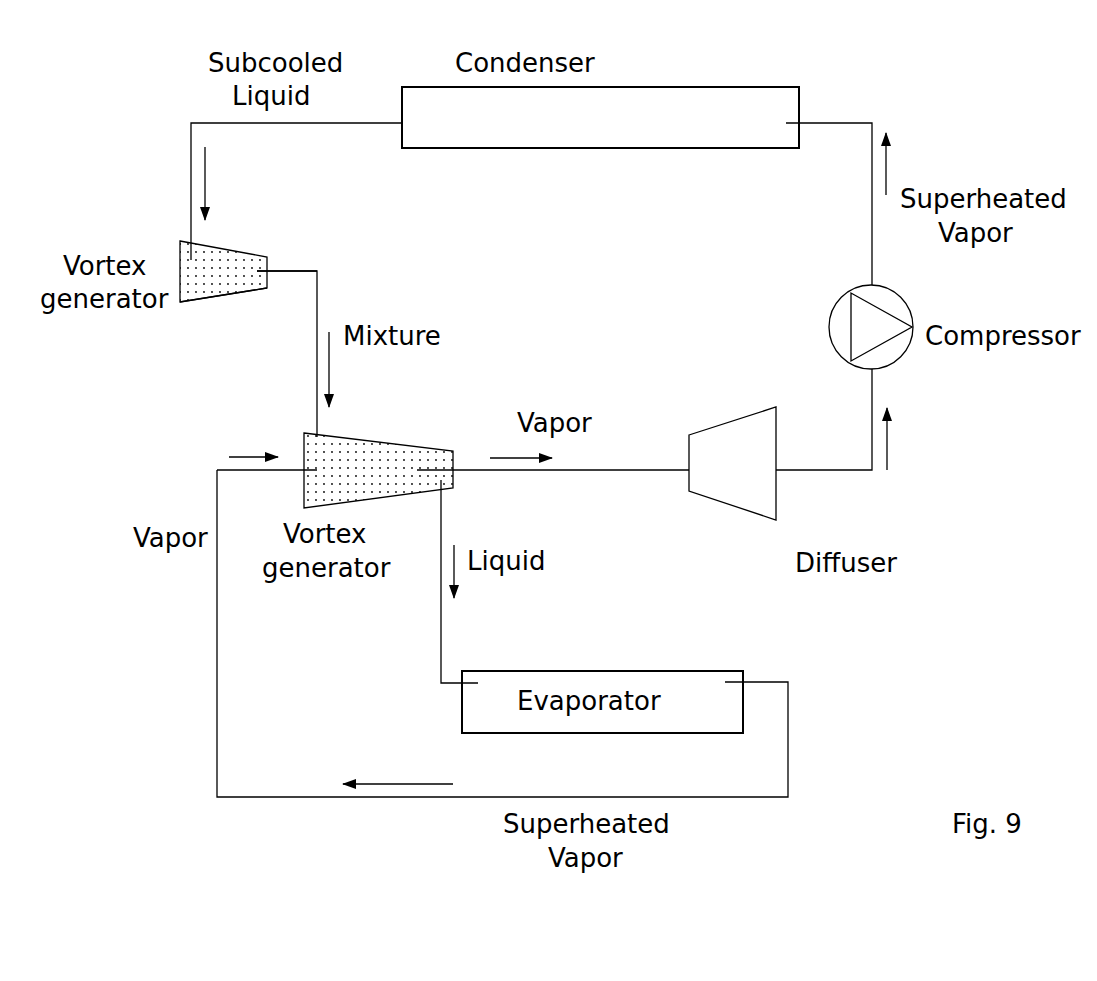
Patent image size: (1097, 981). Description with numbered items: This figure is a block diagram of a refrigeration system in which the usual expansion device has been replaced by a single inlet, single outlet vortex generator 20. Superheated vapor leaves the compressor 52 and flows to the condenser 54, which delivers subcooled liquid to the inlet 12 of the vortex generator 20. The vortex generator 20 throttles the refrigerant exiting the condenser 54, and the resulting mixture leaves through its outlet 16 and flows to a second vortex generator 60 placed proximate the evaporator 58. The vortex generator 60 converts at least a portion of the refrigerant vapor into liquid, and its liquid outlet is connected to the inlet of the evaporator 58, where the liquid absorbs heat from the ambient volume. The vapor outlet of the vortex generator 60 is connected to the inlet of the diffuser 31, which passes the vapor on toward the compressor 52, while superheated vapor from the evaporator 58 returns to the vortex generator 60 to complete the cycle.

The inlet 12 is at (190, 236).
The outlet 16 is at (283, 271).
The vortex generator 20 is at (215, 297).
The vortex generator 60 is at (377, 450).
The diffuser 31 is at (776, 492).
The compressor 52 is at (899, 308).
The condenser 54 is at (692, 87).
The evaporator 58 is at (633, 671).